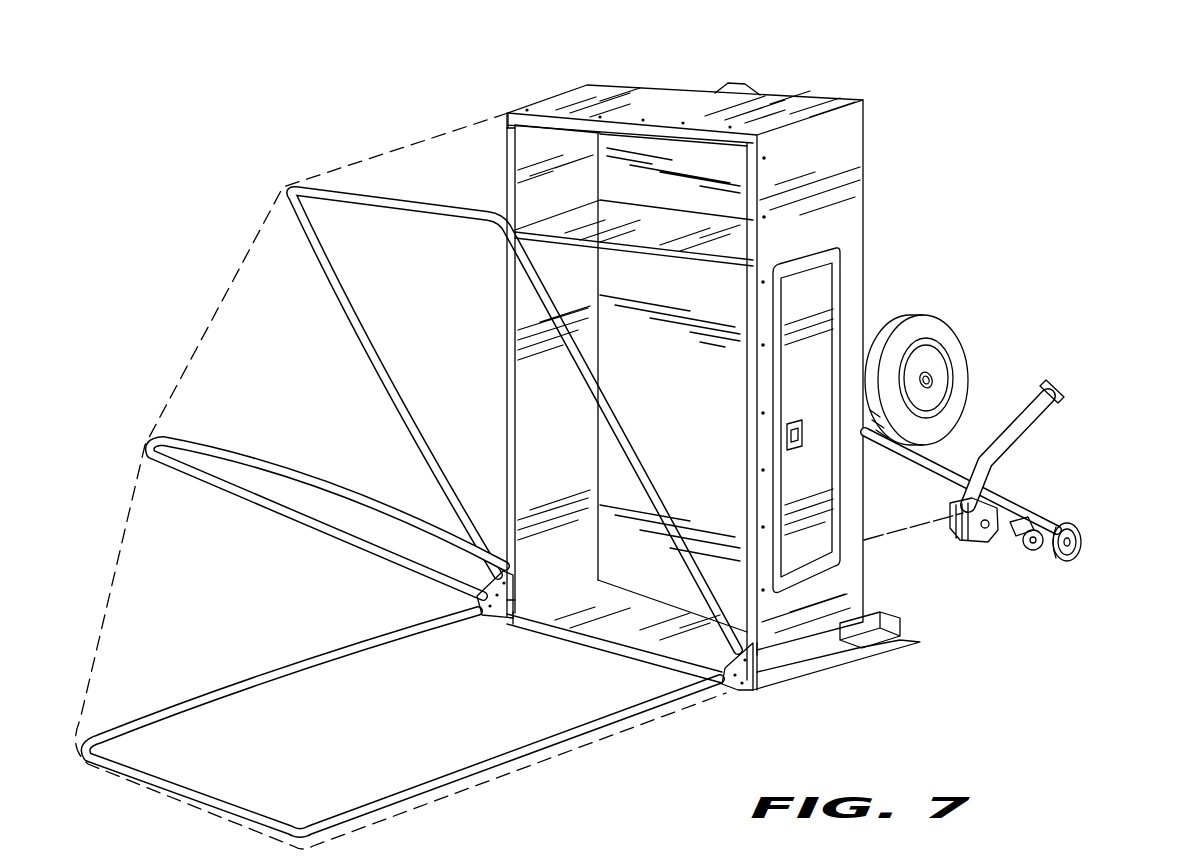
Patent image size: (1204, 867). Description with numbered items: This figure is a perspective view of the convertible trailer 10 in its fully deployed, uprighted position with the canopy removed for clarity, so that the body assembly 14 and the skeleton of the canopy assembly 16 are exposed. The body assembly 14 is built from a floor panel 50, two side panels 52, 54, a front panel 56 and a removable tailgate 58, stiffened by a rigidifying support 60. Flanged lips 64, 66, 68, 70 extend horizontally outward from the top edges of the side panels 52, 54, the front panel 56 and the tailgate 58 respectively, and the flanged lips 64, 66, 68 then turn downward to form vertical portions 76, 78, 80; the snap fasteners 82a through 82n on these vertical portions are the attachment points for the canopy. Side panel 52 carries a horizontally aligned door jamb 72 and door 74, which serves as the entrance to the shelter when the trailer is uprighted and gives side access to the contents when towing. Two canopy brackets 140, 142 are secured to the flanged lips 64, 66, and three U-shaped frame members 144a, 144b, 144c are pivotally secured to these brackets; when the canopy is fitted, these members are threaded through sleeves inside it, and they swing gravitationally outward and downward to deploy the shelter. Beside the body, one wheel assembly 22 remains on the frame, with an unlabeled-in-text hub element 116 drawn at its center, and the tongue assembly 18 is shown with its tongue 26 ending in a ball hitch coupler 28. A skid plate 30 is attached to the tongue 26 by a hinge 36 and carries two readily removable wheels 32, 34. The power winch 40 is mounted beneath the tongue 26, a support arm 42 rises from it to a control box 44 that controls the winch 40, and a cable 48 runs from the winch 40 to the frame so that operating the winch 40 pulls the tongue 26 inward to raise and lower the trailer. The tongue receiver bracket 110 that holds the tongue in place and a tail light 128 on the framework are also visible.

The convertible trailer 10 is at (968, 135).
The body assembly 14 is at (868, 139).
The canopy assembly 16 is at (278, 180).
The tongue assembly 18 is at (1056, 492).
The wheel assembly 22 is at (943, 310).
The tongue 26 is at (953, 463).
The ball hitch coupler 28 is at (1060, 520).
The skid plate 30 is at (1040, 552).
The removable wheel 32 is at (1073, 550).
The removable wheel 34 is at (1027, 550).
The hinge 36 is at (1020, 535).
The power winch 40 is at (963, 537).
The support arm 42 is at (1027, 443).
The control box 44 is at (1060, 403).
The cable 48 is at (923, 517).
The floor panel 50 is at (595, 222).
The side panel 52 is at (868, 200).
The side panel 54 is at (547, 387).
The front panel 56 is at (689, 97).
The tailgate 58 is at (563, 612).
The rigidifying support 60 is at (817, 670).
The flanged lip 64 is at (728, 510).
The flanged lip 66 is at (508, 353).
The flanged lip 68 is at (707, 133).
The flanged lip 70 is at (630, 653).
The door jamb 72 is at (848, 263).
The door 74 is at (840, 327).
The vertical portion 76 is at (757, 620).
The vertical portion 78 is at (507, 284).
The vertical portion 80 is at (622, 117).
The snap fastener 82a is at (763, 650).
The snap fastener 82n is at (557, 112).
The tongue receiver bracket 110 is at (760, 87).
The roller hub 116 is at (953, 353).
The tail light 128 is at (870, 650).
The canopy bracket 140 is at (728, 688).
The canopy bracket 142 is at (463, 593).
The U-shaped frame member 144a is at (288, 826).
The U-shaped frame member 144b is at (233, 453).
The U-shaped frame member 144c is at (397, 190).